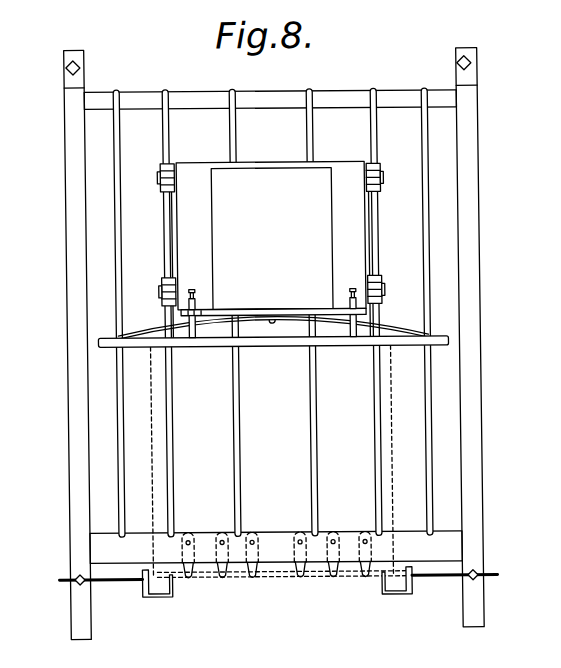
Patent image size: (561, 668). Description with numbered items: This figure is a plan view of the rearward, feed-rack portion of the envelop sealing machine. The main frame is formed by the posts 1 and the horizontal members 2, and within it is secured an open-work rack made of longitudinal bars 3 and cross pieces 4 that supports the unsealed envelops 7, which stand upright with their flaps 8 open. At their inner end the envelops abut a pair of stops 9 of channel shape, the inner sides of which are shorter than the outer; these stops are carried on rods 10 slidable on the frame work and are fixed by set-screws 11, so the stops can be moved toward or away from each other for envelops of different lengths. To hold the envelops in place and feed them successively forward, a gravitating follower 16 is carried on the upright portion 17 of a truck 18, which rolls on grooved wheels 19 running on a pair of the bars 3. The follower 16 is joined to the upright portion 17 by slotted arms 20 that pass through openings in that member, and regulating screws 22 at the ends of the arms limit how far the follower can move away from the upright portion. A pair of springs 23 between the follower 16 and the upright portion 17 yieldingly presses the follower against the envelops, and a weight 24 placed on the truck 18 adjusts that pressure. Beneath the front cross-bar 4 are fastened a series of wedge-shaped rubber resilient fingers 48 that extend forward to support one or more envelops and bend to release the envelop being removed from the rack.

The posts 1 is at (83, 78).
The horizontal members 2 is at (65, 404).
The longitudinal bars 3 is at (111, 439).
The cross pieces 4 is at (195, 94).
The unsealed envelops 7 is at (147, 482).
The flaps 8 is at (336, 580).
The stops 9 is at (152, 598).
The rods 10 is at (105, 587).
The set-screws 11 is at (70, 584).
The follower 16 is at (278, 351).
The upright portion 17 is at (258, 308).
The truck 18 is at (175, 227).
The grooved wheels 19 is at (158, 171).
The slotted arms 20 is at (193, 306).
The regulating screws 22 is at (189, 289).
The springs 23 is at (133, 337).
The weight 24 is at (272, 239).
The resilient fingers 48 is at (186, 579).